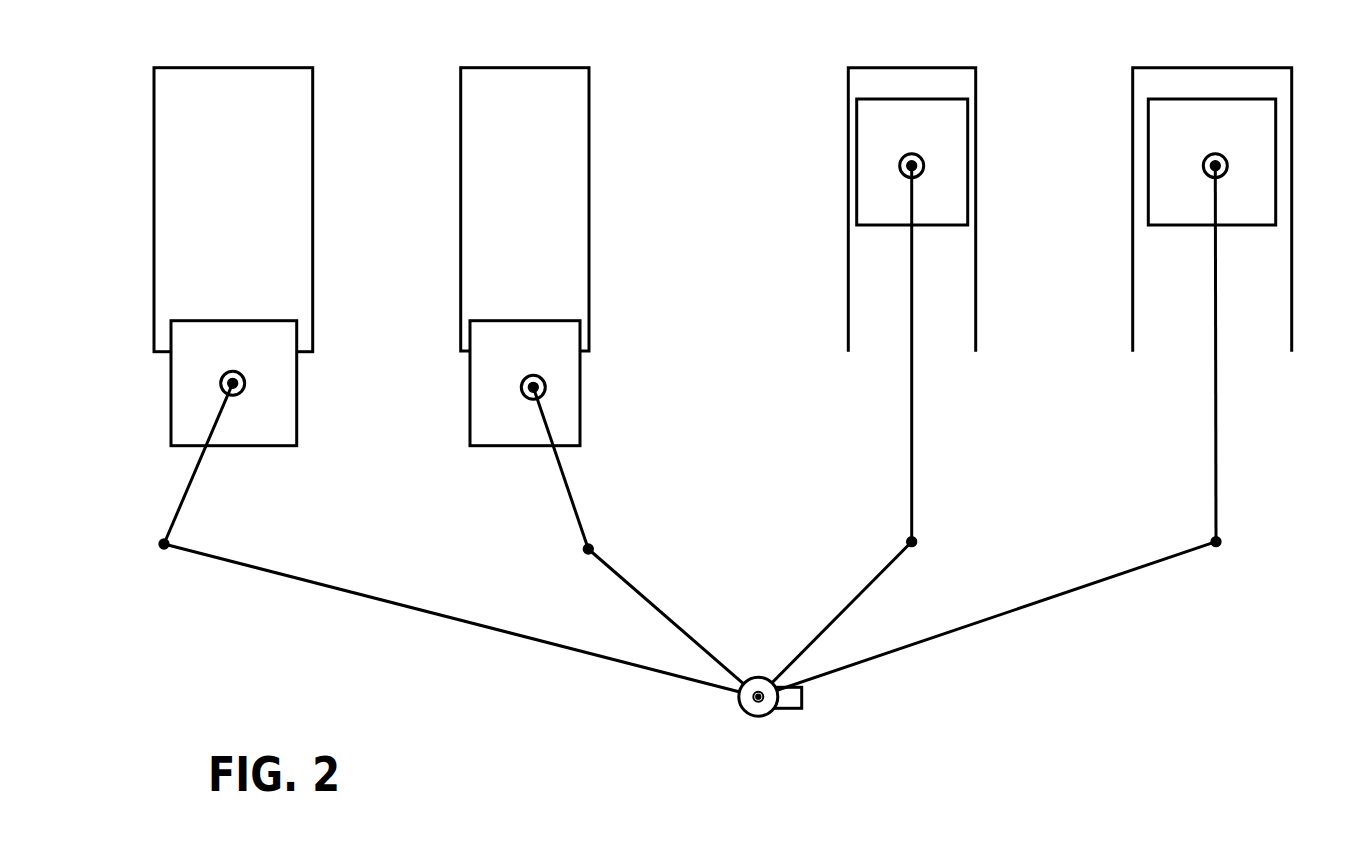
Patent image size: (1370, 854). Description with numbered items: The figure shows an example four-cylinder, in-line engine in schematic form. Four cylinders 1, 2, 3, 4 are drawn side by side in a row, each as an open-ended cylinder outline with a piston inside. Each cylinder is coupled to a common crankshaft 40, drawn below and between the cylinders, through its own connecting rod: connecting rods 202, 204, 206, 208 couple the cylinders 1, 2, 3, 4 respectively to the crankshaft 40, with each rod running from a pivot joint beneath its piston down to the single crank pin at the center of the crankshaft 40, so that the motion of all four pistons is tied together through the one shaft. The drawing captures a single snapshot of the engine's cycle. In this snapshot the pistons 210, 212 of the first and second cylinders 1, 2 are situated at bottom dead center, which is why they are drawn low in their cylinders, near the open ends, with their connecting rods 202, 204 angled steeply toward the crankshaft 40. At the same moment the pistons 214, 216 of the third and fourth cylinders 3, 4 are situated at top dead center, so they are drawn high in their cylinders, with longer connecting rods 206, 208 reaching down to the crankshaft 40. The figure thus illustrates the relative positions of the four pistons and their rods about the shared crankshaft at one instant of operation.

The first cylinder 1 is at (223, 67).
The second cylinder 2 is at (516, 67).
The third cylinder 3 is at (912, 67).
The fourth cylinder 4 is at (1212, 67).
The crankshaft 40 is at (759, 677).
The connecting rod 202 is at (430, 615).
The connecting rod 204 is at (670, 618).
The connecting rod 206 is at (885, 570).
The connecting rod 208 is at (1012, 613).
The piston 210 is at (297, 430).
The piston 212 is at (580, 390).
The piston 214 is at (976, 163).
The piston 216 is at (1276, 150).